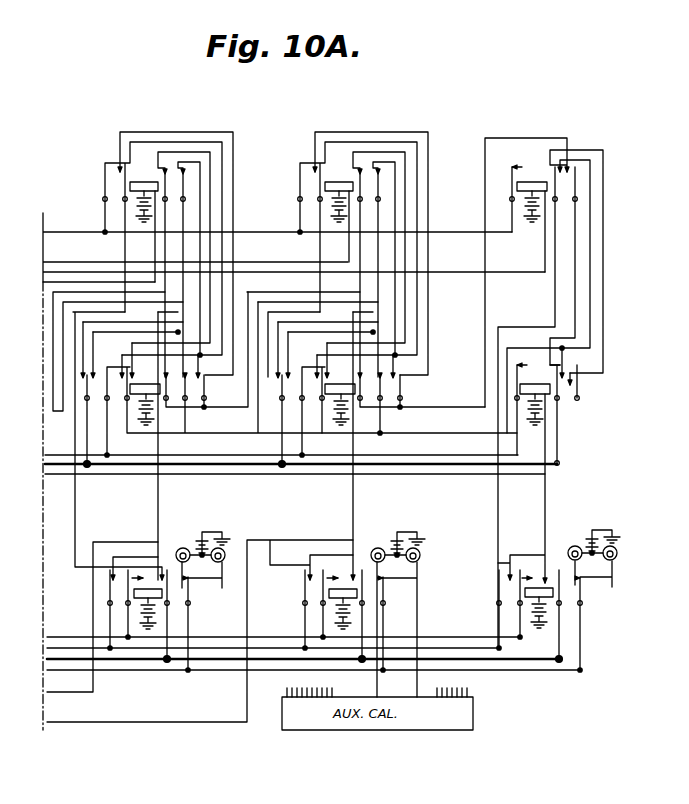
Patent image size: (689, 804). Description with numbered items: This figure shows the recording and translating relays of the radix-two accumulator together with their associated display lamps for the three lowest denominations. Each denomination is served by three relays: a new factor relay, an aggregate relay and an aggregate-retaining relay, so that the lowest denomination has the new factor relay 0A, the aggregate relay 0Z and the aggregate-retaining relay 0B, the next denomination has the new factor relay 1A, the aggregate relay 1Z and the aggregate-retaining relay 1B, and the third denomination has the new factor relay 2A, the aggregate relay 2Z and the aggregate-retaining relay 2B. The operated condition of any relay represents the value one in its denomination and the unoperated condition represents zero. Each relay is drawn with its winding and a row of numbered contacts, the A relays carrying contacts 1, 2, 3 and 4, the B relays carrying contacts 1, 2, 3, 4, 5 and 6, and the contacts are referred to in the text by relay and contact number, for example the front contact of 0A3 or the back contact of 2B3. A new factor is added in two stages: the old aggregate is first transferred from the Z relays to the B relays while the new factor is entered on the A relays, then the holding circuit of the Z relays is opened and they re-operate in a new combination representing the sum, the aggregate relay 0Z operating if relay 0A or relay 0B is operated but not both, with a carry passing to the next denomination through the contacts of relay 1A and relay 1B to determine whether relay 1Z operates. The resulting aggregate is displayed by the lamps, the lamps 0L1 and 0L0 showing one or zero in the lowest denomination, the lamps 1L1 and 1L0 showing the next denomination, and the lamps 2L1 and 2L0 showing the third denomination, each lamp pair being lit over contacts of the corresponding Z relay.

The new factor relay 2A is at (147, 180).
The new factor relay 1A is at (342, 180).
The new factor relay 0A is at (535, 180).
The aggregate-retaining relay 2B is at (299, 436).
The aggregate-retaining relay 1B is at (343, 382).
The aggregate-retaining relay 0B is at (538, 382).
The aggregate relay 2Z is at (151, 586).
The aggregate relay 1Z is at (346, 586).
The aggregate relay 0Z is at (542, 585).
The lamp 2L1 is at (198, 547).
The lamp 2L0 is at (227, 562).
The lamp 1L1 is at (393, 547).
The lamp 1L0 is at (423, 562).
The lamp 0L1 is at (589, 545).
The lamp 0L0 is at (621, 553).
The relay contact 1 is at (111, 404).
The relay contact 2 is at (91, 404).
The relay contact 3 is at (131, 404).
The relay contact 4 is at (170, 404).
The relay contact 5 is at (189, 404).
The relay contact 6 is at (208, 404).